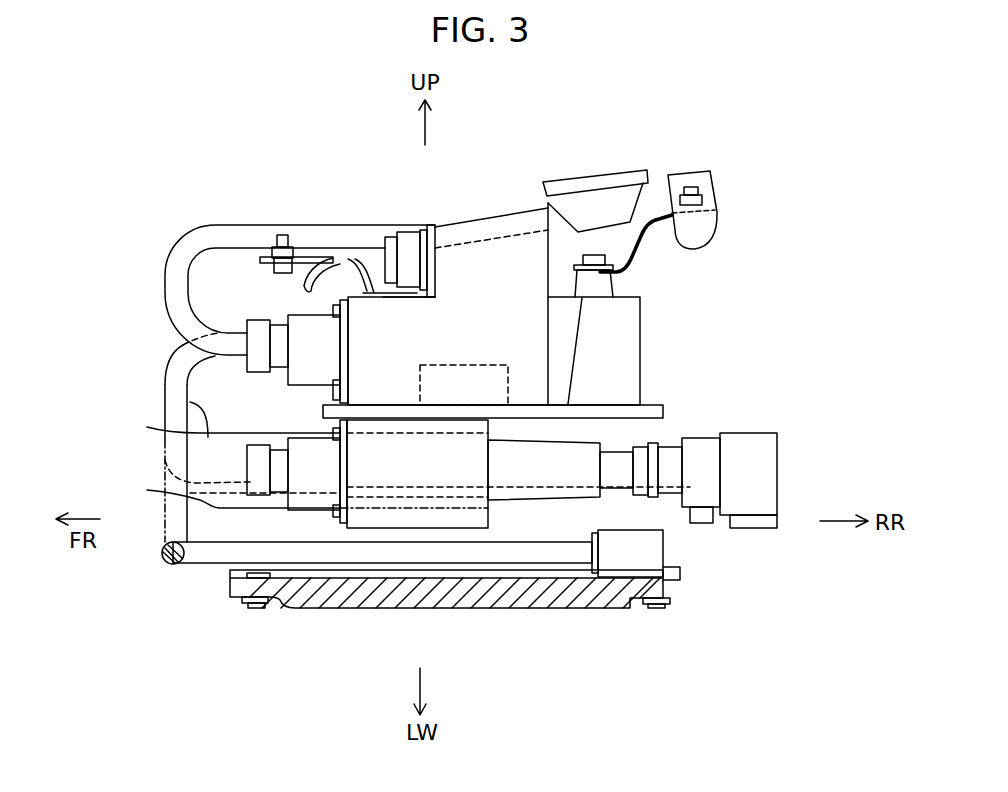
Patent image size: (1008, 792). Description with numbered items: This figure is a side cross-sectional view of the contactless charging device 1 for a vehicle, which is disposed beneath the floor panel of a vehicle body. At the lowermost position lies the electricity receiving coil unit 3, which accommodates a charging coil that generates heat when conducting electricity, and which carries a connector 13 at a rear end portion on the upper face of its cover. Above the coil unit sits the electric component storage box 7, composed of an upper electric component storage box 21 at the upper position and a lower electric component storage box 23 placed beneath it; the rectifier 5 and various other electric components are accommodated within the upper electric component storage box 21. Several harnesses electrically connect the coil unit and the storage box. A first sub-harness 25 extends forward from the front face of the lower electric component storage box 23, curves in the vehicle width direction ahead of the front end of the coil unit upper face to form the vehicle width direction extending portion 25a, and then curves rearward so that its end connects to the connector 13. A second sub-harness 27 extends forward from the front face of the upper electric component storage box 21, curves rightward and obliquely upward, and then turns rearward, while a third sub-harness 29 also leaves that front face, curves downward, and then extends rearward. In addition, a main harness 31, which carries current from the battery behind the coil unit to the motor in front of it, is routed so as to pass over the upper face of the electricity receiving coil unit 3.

The contactless charging device for a vehicle 1 is at (641, 128).
The electricity receiving coil unit 3 is at (543, 598).
The rectifier 5 is at (460, 365).
The electric component storage box 7 is at (654, 382).
The connector 13 is at (648, 548).
The upper electric component storage box 21 is at (622, 328).
The lower electric component storage box 23 is at (370, 517).
The first sub-harness 25 is at (170, 567).
The vehicle width direction extending portion 25a is at (170, 567).
The second sub-harness 27 is at (231, 240).
The third sub-harness 29 is at (183, 362).
The main harness 31 is at (190, 402).